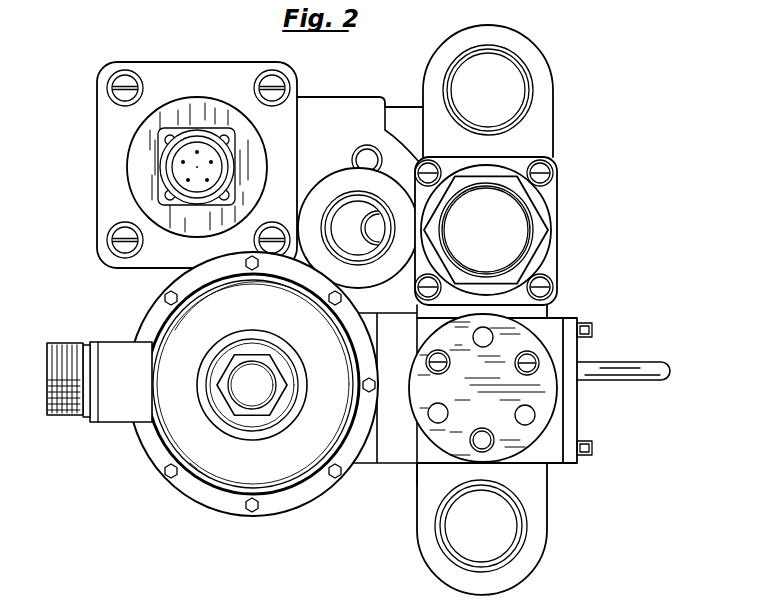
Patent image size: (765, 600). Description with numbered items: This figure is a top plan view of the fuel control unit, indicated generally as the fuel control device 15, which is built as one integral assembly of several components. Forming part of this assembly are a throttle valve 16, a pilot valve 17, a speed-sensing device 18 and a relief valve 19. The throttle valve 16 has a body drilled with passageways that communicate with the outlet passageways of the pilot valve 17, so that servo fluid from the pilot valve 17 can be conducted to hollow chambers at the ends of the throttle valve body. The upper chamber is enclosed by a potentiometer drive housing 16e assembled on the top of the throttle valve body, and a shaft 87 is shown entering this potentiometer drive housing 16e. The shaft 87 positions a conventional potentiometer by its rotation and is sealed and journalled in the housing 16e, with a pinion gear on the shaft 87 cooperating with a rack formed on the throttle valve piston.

The fuel control device 15 is at (554, 103).
The throttle valve 16 is at (565, 316).
The potentiometer drive housing 16e is at (515, 389).
The pilot valve 17 is at (300, 510).
The speed-sensing device 18 is at (193, 62).
The relief valve 19 is at (548, 204).
The shaft 87 is at (646, 369).